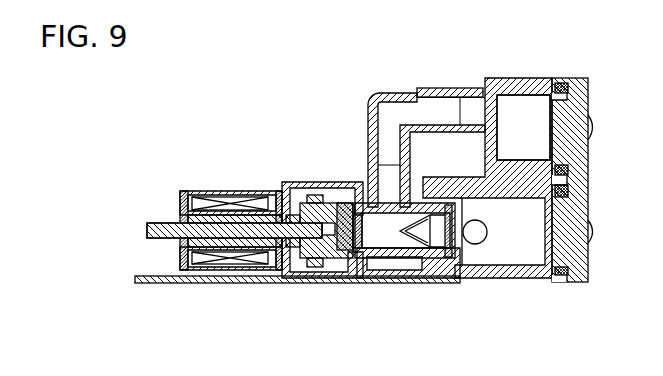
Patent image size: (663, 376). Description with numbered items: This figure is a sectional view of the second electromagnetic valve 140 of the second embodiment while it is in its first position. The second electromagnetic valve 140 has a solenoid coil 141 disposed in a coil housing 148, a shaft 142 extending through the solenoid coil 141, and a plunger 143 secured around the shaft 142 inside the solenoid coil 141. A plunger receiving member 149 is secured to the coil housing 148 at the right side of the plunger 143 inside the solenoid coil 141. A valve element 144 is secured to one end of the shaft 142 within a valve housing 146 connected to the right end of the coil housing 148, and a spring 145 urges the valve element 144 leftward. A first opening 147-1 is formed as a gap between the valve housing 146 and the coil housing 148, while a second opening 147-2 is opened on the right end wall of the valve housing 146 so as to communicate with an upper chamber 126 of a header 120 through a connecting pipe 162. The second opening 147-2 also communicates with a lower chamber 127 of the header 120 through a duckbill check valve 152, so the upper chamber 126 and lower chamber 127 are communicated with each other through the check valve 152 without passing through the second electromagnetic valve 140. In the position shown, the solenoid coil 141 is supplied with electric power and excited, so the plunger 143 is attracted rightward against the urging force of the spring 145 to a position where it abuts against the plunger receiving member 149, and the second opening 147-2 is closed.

The header 120 is at (540, 78).
The upper chamber 126 is at (522, 125).
The lower chamber 127 is at (522, 233).
The second electromagnetic valve 140 is at (312, 170).
The solenoid coil 141 is at (180, 193).
The shaft 142 is at (247, 235).
The plunger 143 is at (182, 245).
The valve element 144 is at (357, 233).
The spring 145 is at (320, 250).
The valve housing 146 is at (327, 180).
The first opening 147-1 is at (273, 180).
The second opening 147-2 is at (393, 260).
The coil housing 148 is at (225, 180).
The plunger receiving member 149 is at (228, 272).
The duckbill check valve 152 is at (427, 258).
The connecting pipe 162 is at (393, 93).